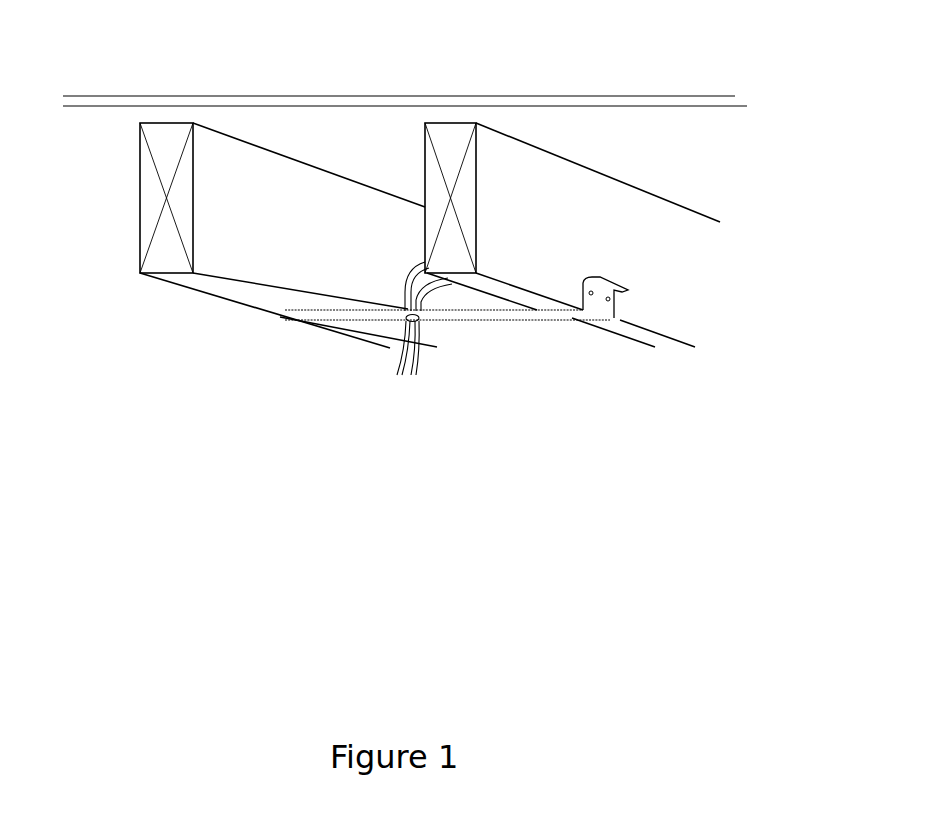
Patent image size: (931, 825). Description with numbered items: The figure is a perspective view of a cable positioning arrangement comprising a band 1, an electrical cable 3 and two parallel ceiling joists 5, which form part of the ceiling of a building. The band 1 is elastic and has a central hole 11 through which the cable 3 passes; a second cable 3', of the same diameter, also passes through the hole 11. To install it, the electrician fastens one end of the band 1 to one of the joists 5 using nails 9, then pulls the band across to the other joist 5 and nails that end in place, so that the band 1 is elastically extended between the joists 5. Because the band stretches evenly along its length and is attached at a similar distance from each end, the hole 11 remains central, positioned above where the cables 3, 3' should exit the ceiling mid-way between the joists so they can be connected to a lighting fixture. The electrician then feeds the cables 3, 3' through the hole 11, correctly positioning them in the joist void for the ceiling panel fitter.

The band 1 is at (486, 327).
The electrical cable 3 is at (365, 269).
The second cable 3' is at (374, 250).
The ceiling joists 5 is at (227, 168).
The nails 9 is at (594, 297).
The central hole 11 is at (423, 329).